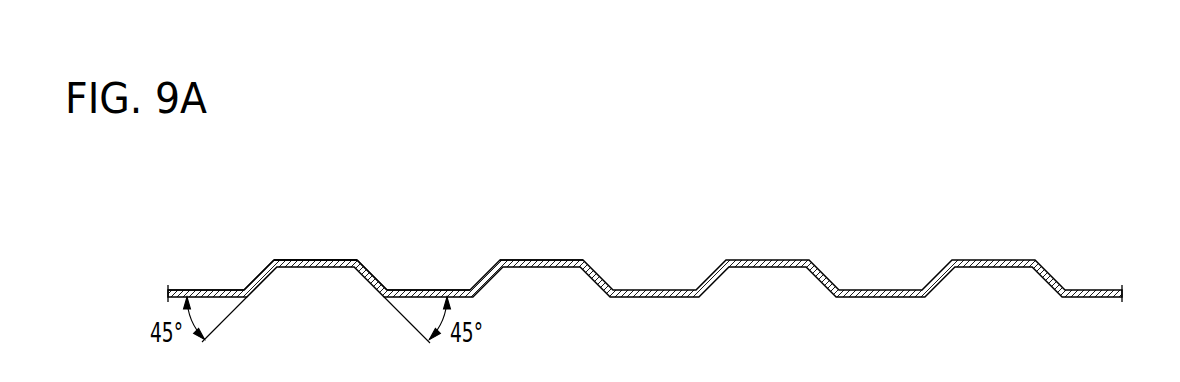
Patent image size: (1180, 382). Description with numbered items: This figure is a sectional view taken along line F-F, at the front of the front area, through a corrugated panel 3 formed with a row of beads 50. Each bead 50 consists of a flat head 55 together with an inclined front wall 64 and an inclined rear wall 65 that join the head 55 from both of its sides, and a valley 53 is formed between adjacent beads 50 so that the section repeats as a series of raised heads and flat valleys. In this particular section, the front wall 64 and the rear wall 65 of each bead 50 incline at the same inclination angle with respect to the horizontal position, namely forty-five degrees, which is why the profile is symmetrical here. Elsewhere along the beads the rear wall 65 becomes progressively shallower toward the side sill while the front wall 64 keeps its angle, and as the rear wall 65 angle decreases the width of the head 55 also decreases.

The corrugated plate 3 is at (777, 252).
The bead 50 is at (304, 256).
The valley 53 is at (193, 290).
The head 55 is at (318, 260).
The front wall 64 is at (262, 272).
The rear wall 65 is at (371, 274).